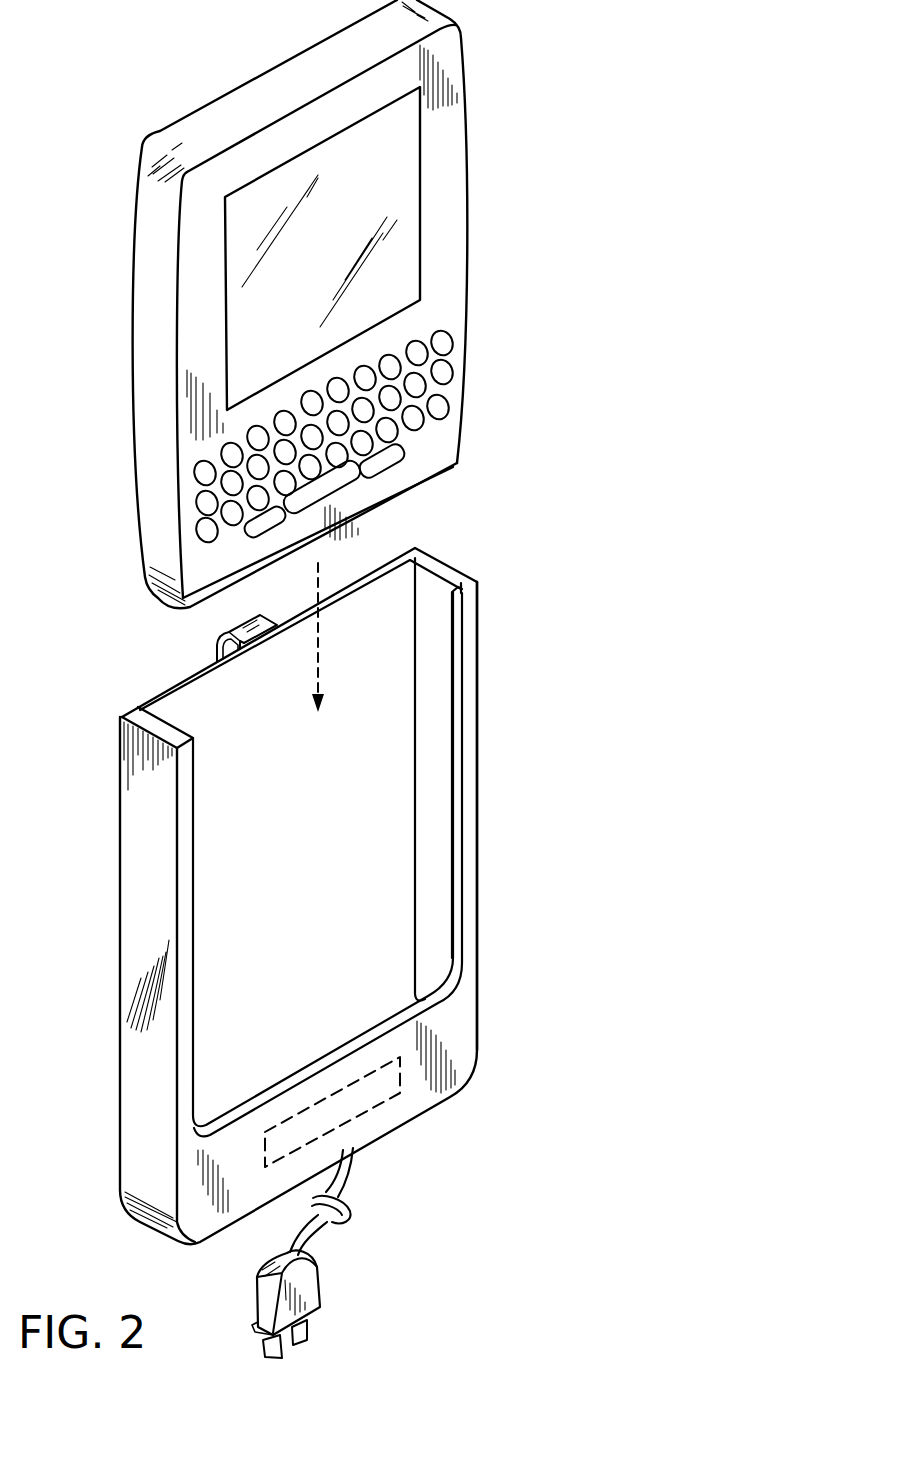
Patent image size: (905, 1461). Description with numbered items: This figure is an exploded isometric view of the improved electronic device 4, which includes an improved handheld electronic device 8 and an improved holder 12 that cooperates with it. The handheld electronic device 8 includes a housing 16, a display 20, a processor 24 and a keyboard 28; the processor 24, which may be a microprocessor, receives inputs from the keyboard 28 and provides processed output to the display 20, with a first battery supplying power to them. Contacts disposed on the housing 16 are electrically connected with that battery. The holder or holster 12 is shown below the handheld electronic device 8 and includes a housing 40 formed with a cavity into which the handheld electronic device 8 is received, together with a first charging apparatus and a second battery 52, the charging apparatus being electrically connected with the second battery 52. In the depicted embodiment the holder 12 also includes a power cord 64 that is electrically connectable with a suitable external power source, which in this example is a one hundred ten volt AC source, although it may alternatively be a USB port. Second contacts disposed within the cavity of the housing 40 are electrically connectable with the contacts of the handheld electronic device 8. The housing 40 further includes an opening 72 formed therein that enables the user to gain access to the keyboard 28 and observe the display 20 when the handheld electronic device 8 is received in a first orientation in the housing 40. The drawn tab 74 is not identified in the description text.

The electronic device 4 is at (462, 522).
The handheld electronic device 8 is at (490, 277).
The holder 12 is at (480, 1000).
The housing 16 is at (465, 102).
The display 20 is at (393, 210).
The processor 24 is at (190, 133).
The keyboard 28 is at (457, 352).
The housing 40 is at (473, 885).
The second battery 52 is at (348, 1127).
The power cord 64 is at (333, 1230).
The opening 72 is at (457, 695).
The clip tab 74 is at (187, 713).